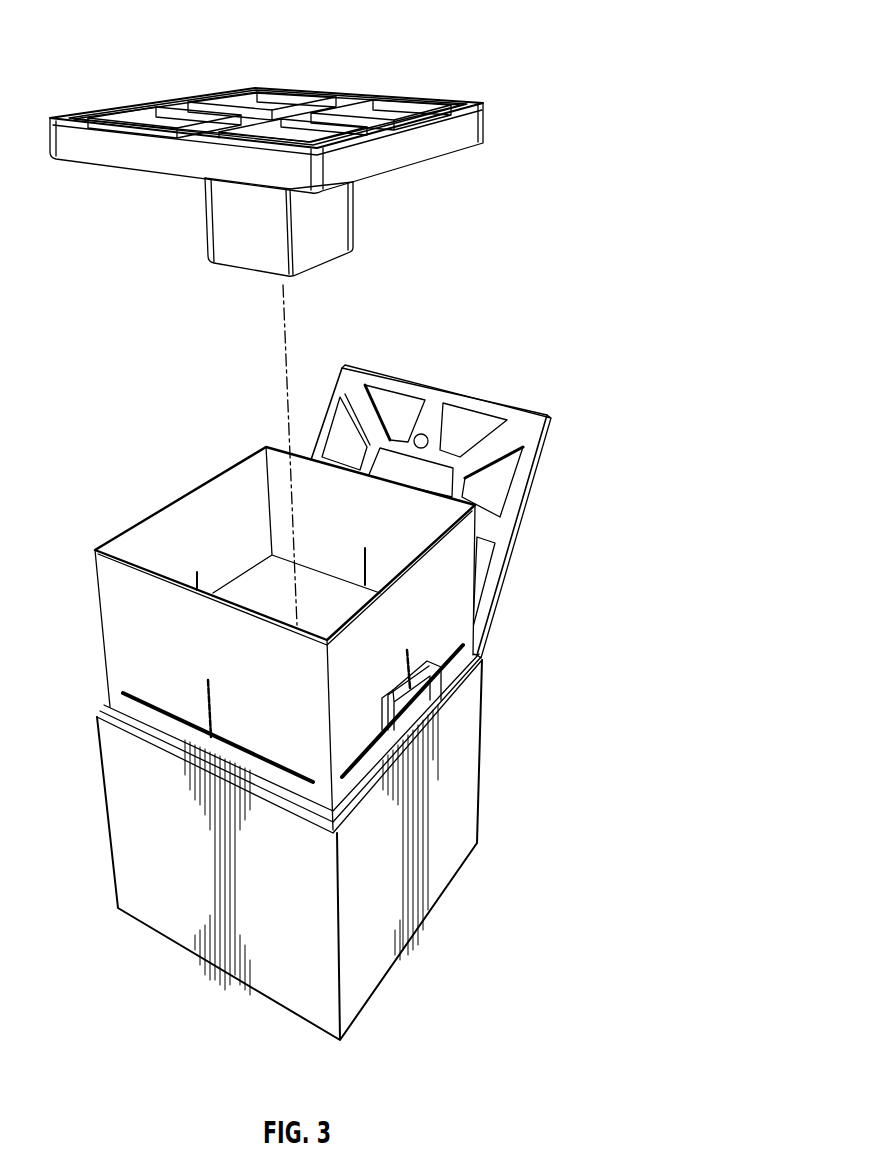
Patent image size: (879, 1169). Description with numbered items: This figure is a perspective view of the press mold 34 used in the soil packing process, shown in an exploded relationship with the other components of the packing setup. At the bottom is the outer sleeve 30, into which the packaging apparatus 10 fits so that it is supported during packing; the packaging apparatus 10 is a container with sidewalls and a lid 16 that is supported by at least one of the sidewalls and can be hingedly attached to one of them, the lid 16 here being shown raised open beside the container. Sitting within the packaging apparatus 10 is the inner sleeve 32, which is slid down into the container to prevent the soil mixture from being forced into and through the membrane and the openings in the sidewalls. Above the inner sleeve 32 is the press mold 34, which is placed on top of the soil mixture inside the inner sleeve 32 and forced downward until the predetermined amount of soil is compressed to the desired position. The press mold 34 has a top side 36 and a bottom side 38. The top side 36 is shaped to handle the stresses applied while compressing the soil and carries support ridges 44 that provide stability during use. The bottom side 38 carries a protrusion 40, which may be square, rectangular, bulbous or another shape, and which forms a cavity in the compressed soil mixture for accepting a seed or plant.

The packaging apparatus 10 is at (112, 707).
The lid 16 is at (527, 430).
The outer sleeve 30 is at (460, 790).
The inner sleeve 32 is at (450, 610).
The press mold 34 is at (477, 127).
The top side 36 is at (370, 66).
The bottom side 38 is at (146, 190).
The protrusion 40 is at (337, 233).
The support ridges 44 is at (203, 102).